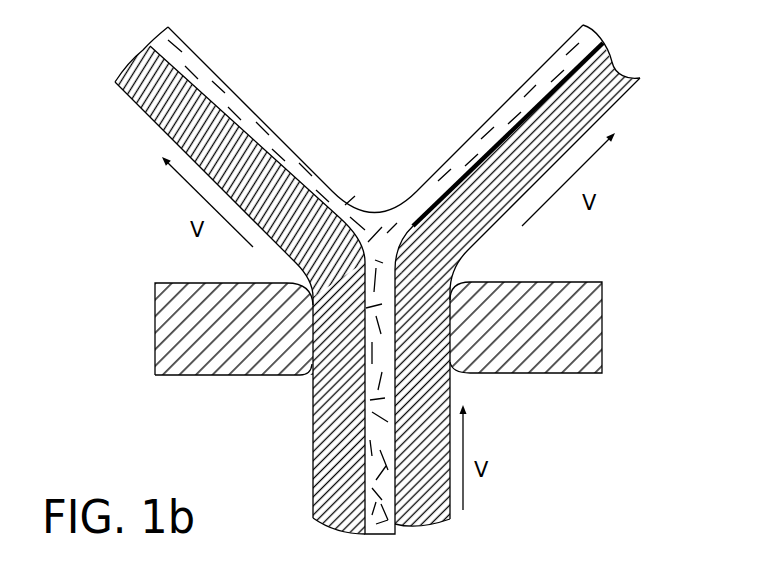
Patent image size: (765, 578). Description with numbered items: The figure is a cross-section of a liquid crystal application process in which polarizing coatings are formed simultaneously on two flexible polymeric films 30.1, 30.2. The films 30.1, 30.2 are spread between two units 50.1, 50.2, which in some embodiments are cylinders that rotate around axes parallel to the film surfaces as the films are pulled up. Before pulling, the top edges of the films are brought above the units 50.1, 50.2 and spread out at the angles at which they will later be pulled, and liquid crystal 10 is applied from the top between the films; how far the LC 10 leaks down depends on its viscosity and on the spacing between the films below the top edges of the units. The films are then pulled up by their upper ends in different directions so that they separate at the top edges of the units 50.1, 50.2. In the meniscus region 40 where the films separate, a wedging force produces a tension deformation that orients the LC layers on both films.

The liquid crystal 10 is at (377, 218).
The first polymeric film 30.1 is at (143, 80).
The second polymeric film 30.2 is at (610, 72).
The meniscus region 40 is at (387, 186).
The first unit 50.1 is at (273, 366).
The second unit 50.2 is at (517, 365).